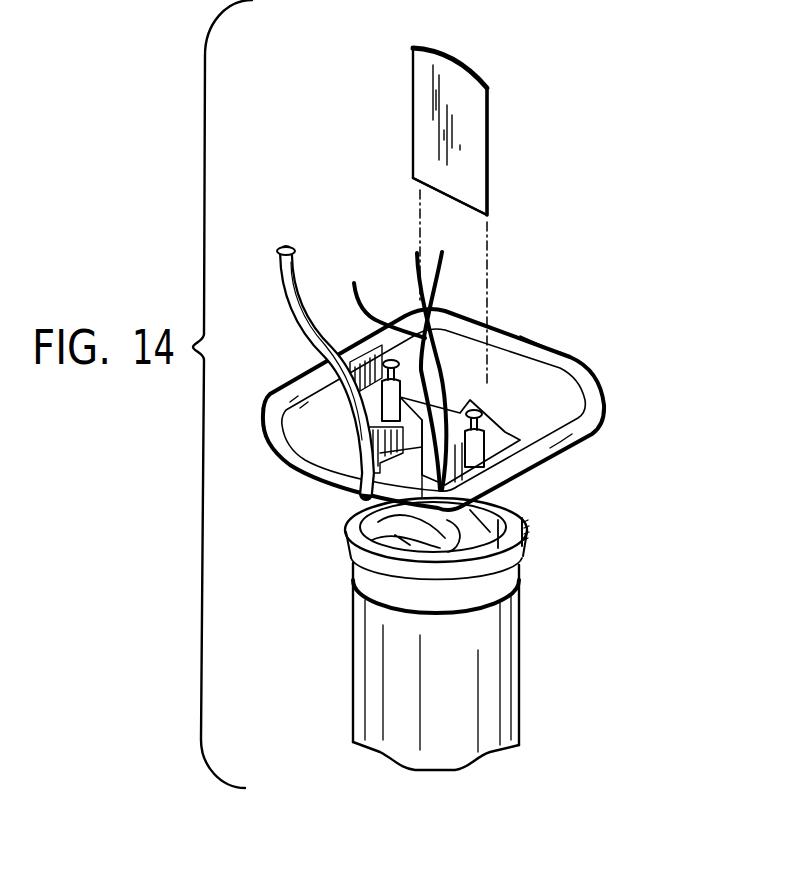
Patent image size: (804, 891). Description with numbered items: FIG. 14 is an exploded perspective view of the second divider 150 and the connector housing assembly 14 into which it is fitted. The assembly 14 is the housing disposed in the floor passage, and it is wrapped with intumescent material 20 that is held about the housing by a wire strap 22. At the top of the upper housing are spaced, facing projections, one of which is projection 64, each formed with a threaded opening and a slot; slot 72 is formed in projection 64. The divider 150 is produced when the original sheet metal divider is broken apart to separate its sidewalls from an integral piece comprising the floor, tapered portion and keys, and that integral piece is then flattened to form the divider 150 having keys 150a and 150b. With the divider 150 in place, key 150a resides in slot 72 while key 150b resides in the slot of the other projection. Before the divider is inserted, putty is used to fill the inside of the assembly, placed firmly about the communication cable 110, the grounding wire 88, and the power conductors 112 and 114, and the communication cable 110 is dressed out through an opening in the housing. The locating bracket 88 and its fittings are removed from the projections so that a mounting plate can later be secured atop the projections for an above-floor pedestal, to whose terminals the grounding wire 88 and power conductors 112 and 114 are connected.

The connector housing assembly 14 is at (467, 627).
The intumescent material 20 is at (461, 711).
The wire strap 22 is at (455, 612).
The projection 64 is at (320, 484).
The slot 72 is at (370, 466).
The grounding wire 88 is at (412, 313).
The communication cable 110 is at (280, 250).
The power conductor 112 is at (450, 273).
The power conductor 114 is at (460, 303).
The divider 150 is at (426, 97).
The key 150a is at (413, 178).
The key 150b is at (487, 215).